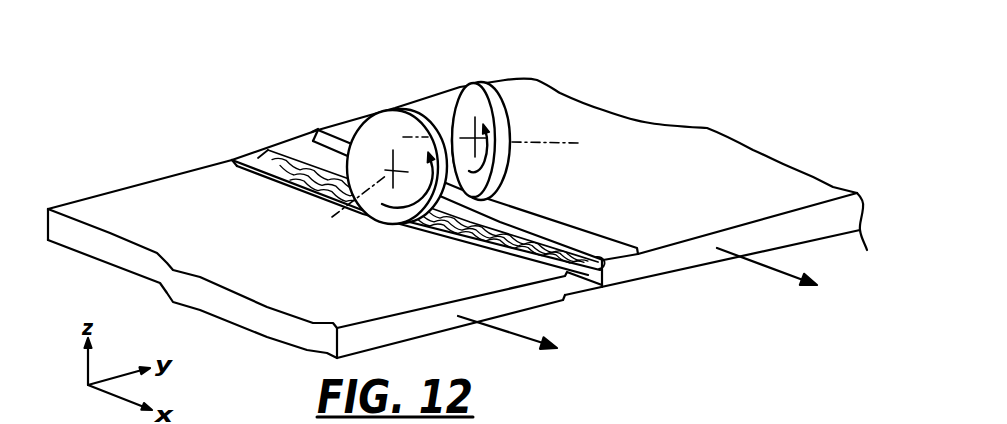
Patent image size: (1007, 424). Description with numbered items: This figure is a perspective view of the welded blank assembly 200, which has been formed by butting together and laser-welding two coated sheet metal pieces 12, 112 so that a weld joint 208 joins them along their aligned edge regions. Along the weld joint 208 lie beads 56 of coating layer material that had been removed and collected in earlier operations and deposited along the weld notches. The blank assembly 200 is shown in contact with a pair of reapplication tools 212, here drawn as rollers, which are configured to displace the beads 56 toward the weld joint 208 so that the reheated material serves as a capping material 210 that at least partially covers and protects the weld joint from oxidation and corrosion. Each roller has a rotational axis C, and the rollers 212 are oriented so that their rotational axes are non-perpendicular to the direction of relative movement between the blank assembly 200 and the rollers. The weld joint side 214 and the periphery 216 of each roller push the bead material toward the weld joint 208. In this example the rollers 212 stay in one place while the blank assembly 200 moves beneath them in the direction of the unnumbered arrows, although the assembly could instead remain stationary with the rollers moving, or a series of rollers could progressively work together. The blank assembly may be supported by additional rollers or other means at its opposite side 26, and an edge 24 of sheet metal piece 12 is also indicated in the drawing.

The sheet metal piece 12 is at (791, 163).
The sheet metal piece 112 is at (96, 192).
The edge of second panel 24 is at (606, 127).
The opposite side 26 is at (682, 277).
The bead 56 is at (235, 160).
The welded blank assembly 200 is at (696, 52).
The weld joint 208 is at (502, 232).
The capping material 210 is at (542, 258).
The reapplication tool 212 is at (392, 110).
The weld joint side 214 is at (459, 82).
The periphery 216 is at (503, 168).
The rotational axis C is at (560, 137).